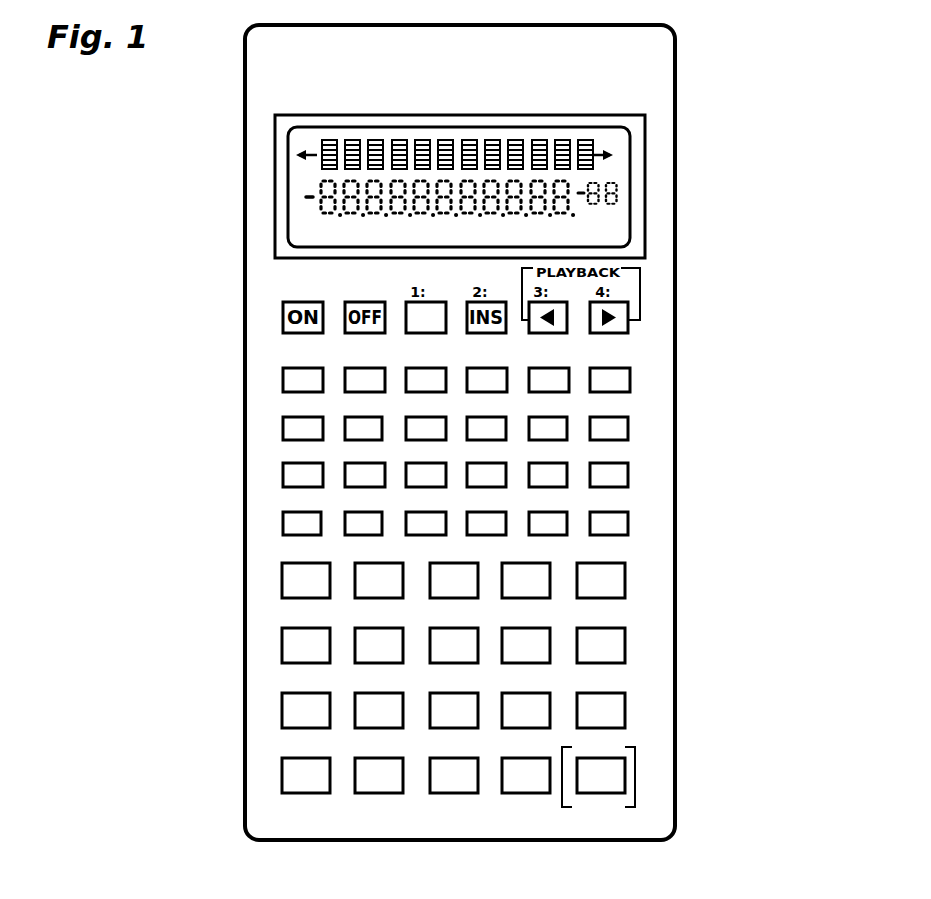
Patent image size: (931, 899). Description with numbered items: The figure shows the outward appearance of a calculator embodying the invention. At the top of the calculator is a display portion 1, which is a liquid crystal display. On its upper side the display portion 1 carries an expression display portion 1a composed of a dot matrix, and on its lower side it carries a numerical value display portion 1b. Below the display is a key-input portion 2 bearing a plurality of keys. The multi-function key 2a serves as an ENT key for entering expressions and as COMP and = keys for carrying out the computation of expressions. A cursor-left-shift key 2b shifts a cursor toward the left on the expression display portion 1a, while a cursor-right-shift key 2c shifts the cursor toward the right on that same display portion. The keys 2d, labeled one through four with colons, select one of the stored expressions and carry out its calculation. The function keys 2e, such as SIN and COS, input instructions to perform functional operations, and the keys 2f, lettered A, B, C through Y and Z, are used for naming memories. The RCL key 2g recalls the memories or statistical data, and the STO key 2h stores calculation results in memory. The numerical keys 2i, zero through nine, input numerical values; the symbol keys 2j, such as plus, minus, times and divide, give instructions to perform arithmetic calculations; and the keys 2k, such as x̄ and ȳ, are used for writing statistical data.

The display portion 1 is at (662, 168).
The expression display portion 1a is at (320, 148).
The numerical value display portion 1b is at (318, 188).
The key-input portion 2 is at (645, 472).
The multi-function key 2a is at (626, 765).
The cursor-left-shift key 2b is at (565, 302).
The cursor-right-shift key 2c is at (628, 327).
The expression selection keys 2d is at (405, 296).
The function keys 2e is at (352, 444).
The memory naming keys 2f is at (255, 420).
The RCL key 2g is at (345, 516).
The STO key 2h is at (277, 527).
The numerical keys 2i is at (268, 708).
The symbol keys 2j is at (640, 641).
The statistical data keys 2k is at (300, 611).